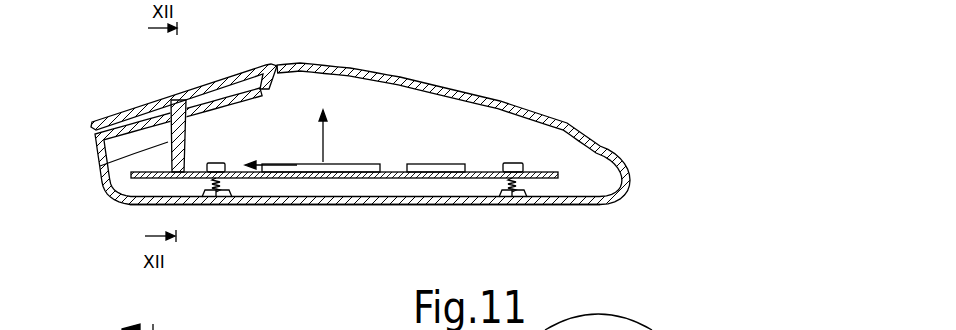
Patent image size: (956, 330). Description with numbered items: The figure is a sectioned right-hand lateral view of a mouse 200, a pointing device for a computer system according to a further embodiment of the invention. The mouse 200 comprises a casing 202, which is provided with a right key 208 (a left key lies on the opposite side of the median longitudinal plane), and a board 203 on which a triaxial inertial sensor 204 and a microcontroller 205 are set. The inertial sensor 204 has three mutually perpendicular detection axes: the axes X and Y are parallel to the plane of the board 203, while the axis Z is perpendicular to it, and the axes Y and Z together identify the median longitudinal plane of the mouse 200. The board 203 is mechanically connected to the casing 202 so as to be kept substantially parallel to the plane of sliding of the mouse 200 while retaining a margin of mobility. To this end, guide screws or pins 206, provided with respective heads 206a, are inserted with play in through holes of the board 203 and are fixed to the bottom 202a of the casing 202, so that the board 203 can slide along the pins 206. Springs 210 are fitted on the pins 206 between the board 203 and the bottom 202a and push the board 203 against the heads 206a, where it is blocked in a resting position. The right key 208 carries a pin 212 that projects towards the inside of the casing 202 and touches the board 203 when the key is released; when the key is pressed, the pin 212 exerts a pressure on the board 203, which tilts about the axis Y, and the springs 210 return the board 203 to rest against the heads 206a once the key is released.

The mouse 200 is at (628, 76).
The casing 202 is at (433, 81).
The bottom of the casing 202a is at (332, 207).
The board 203 is at (359, 178).
The triaxial inertial sensor 204 is at (352, 163).
The microcontroller 205 is at (442, 163).
The guide screws or pins 206 is at (231, 189).
The heads 206a is at (211, 162).
The right key 208 is at (215, 77).
The springs 210 is at (208, 194).
The pins 212 is at (100, 166).